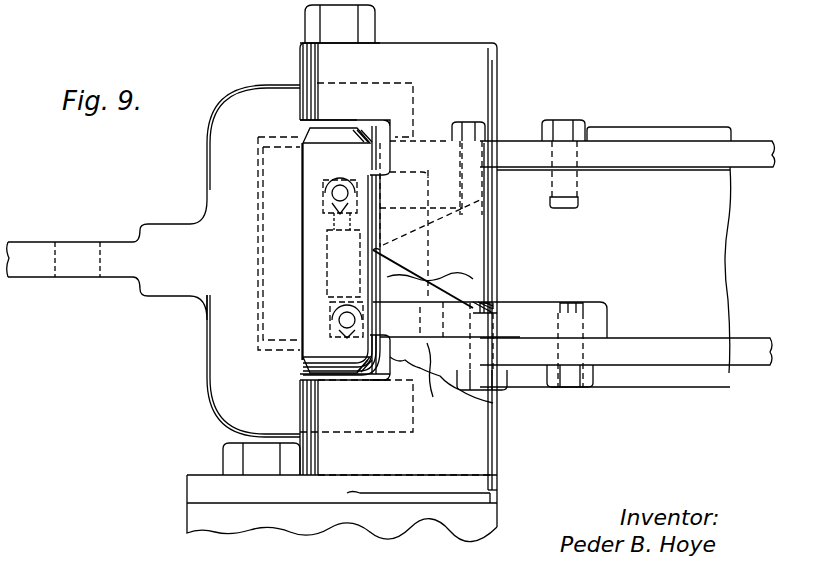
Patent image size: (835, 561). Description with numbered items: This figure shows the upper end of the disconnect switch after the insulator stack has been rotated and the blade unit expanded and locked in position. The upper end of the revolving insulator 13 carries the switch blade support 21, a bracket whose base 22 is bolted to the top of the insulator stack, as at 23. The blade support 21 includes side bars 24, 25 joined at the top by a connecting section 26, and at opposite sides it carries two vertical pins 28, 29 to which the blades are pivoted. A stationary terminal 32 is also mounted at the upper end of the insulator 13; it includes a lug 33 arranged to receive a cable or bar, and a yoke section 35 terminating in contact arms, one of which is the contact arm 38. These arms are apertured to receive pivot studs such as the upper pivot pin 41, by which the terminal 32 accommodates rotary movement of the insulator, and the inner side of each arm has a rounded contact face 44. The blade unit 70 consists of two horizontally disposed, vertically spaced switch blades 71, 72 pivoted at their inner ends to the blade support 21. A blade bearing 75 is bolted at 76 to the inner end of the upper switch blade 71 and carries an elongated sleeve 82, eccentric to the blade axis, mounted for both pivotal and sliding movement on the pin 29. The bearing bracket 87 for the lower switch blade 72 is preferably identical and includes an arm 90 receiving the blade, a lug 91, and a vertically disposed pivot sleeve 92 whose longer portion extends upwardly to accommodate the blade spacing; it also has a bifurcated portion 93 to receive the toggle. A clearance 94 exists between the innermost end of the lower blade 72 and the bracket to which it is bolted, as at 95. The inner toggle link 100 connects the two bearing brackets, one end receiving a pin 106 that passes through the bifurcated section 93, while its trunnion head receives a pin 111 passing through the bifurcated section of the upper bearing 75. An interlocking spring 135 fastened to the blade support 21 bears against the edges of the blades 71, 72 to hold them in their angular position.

The revolving insulator 13 is at (181, 536).
The switch blade support 21 is at (502, 46).
The base 22 is at (200, 487).
The bolt fastening 23 is at (233, 443).
The side bar 24 is at (487, 284).
The side bar 25 is at (490, 247).
The connecting section 26 is at (492, 60).
The vertical pin 28 is at (357, 122).
The vertical pin 29 is at (320, 128).
The stationary terminal 32 is at (227, 97).
The lug 33 is at (38, 240).
The yoke section 35 is at (215, 350).
The contact arm 38 is at (395, 428).
The upper pivot pin 41 is at (305, 16).
The rounded contact face 44 is at (330, 137).
The blade unit 70 is at (668, 133).
The upper switch blade 71 is at (751, 142).
The lower switch blade 72 is at (677, 347).
The blade bearing 75 is at (540, 203).
The bolts 76 is at (483, 124).
The sleeve 82 is at (303, 248).
The bearing bracket 87 is at (542, 310).
The arm 90 is at (540, 385).
The lug 91 is at (432, 295).
The pivot sleeve 92 is at (380, 250).
The bifurcated portion 93 is at (385, 317).
The clearance 94 is at (433, 372).
The bolts 95 is at (500, 393).
The toggle link 100 is at (330, 290).
The pin 106 is at (333, 321).
The pin 111 is at (325, 194).
The interlocking spring 135 is at (712, 228).